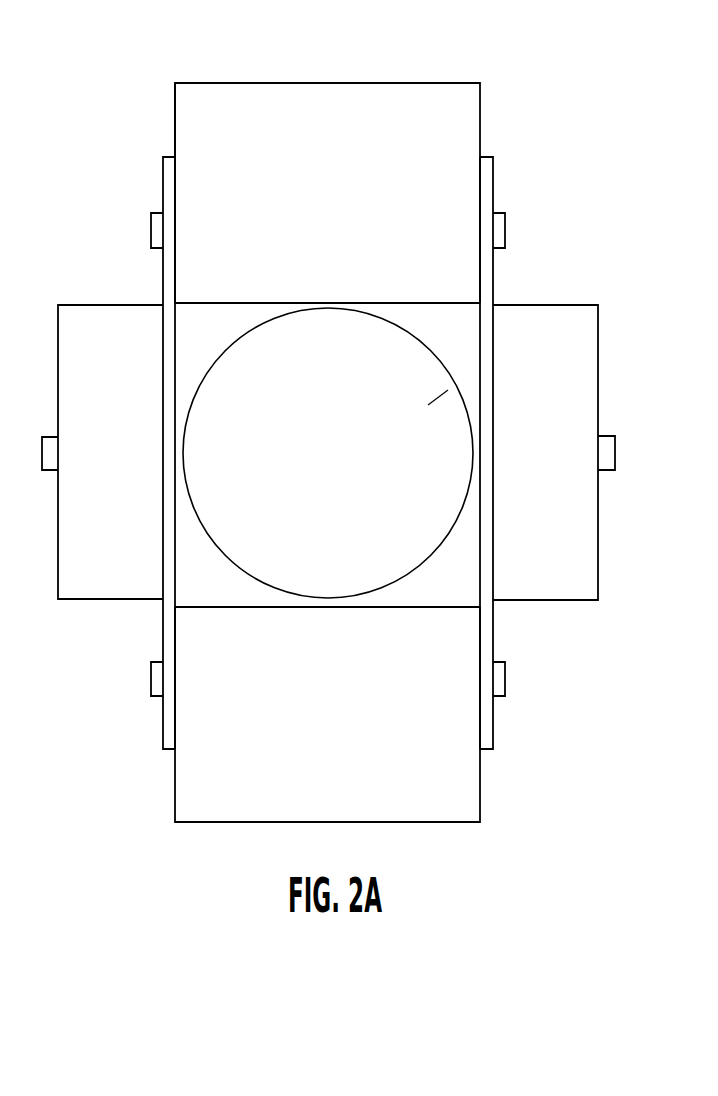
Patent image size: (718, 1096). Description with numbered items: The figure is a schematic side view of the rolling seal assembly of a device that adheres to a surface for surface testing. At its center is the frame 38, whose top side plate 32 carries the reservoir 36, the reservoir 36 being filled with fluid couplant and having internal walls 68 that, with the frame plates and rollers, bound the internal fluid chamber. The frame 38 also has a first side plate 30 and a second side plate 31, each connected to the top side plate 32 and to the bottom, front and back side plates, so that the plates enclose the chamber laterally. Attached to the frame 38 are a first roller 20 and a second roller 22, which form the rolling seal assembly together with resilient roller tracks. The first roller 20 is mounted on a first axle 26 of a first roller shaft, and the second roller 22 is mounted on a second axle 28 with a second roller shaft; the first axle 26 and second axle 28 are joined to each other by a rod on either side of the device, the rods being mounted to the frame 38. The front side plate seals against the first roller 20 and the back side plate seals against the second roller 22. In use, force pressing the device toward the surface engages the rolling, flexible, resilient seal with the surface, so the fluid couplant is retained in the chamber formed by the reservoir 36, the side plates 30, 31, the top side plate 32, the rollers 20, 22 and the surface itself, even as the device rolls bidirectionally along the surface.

The first roller 20 is at (481, 92).
The second roller 22 is at (462, 790).
The first axle 26 is at (148, 227).
The second axle 28 is at (148, 677).
The first side plate 30 is at (163, 189).
The second side plate 31 is at (482, 182).
The top side plate 32 is at (453, 333).
The reservoir 36 is at (405, 558).
The frame 38 is at (157, 142).
The internal walls 68 is at (428, 405).